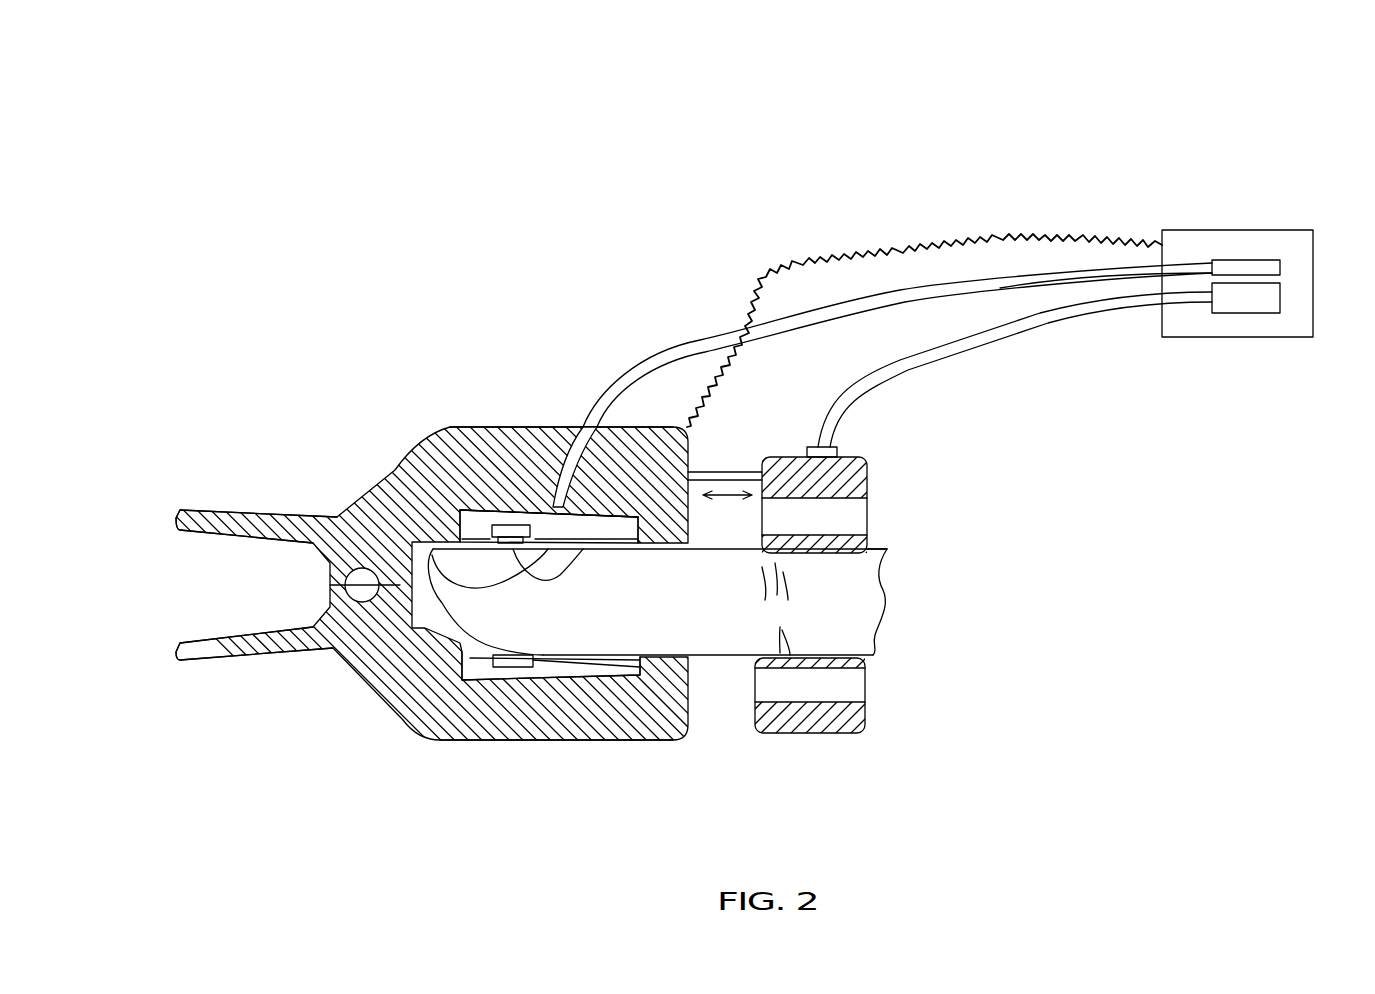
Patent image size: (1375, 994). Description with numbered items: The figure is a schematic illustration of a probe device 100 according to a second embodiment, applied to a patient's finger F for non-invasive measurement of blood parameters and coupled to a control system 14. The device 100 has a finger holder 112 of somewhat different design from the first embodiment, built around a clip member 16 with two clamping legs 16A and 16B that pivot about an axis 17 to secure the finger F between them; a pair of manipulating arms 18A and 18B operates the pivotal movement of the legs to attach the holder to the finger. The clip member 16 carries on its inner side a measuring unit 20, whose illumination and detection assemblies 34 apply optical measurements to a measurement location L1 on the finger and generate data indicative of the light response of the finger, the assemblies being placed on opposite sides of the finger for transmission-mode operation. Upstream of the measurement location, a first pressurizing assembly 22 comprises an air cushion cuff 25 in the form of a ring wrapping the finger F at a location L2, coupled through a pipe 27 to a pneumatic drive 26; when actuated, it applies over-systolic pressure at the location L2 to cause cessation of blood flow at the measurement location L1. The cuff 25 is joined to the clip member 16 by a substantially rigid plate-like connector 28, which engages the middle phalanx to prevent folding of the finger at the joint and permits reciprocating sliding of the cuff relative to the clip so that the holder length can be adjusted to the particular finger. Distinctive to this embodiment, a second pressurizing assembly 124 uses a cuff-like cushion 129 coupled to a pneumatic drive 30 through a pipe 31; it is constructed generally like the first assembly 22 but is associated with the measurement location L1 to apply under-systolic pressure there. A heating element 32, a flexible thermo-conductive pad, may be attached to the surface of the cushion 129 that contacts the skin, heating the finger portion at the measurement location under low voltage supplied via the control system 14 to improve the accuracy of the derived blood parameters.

The probe device 100 is at (292, 221).
The finger holder 112 is at (362, 454).
The control system 14 is at (1315, 133).
The clip member 16 is at (365, 690).
The clamping leg 16A is at (567, 742).
The clamping leg 16B is at (557, 425).
The axis 17 is at (360, 597).
The manipulating arm 18A is at (228, 662).
The manipulating arm 18B is at (190, 520).
The measuring unit 20 is at (476, 528).
The pressurizing assembly 22 is at (884, 518).
The air cushion cuff 25 is at (833, 720).
The pneumatic drive 26 is at (1247, 313).
The pipe 27 is at (1000, 333).
The rigid connector 28 is at (730, 470).
The pneumatic drive 30 is at (1248, 260).
The pipe 31 is at (1073, 283).
The heating element 32 is at (640, 545).
The illumination and detection assemblies 34 is at (513, 527).
The pressurizing assembly 124 is at (666, 421).
The cuff-like cushion 129 is at (608, 560).
The measurement location L1 is at (608, 560).
The location L2 is at (893, 575).
The finger F is at (748, 623).